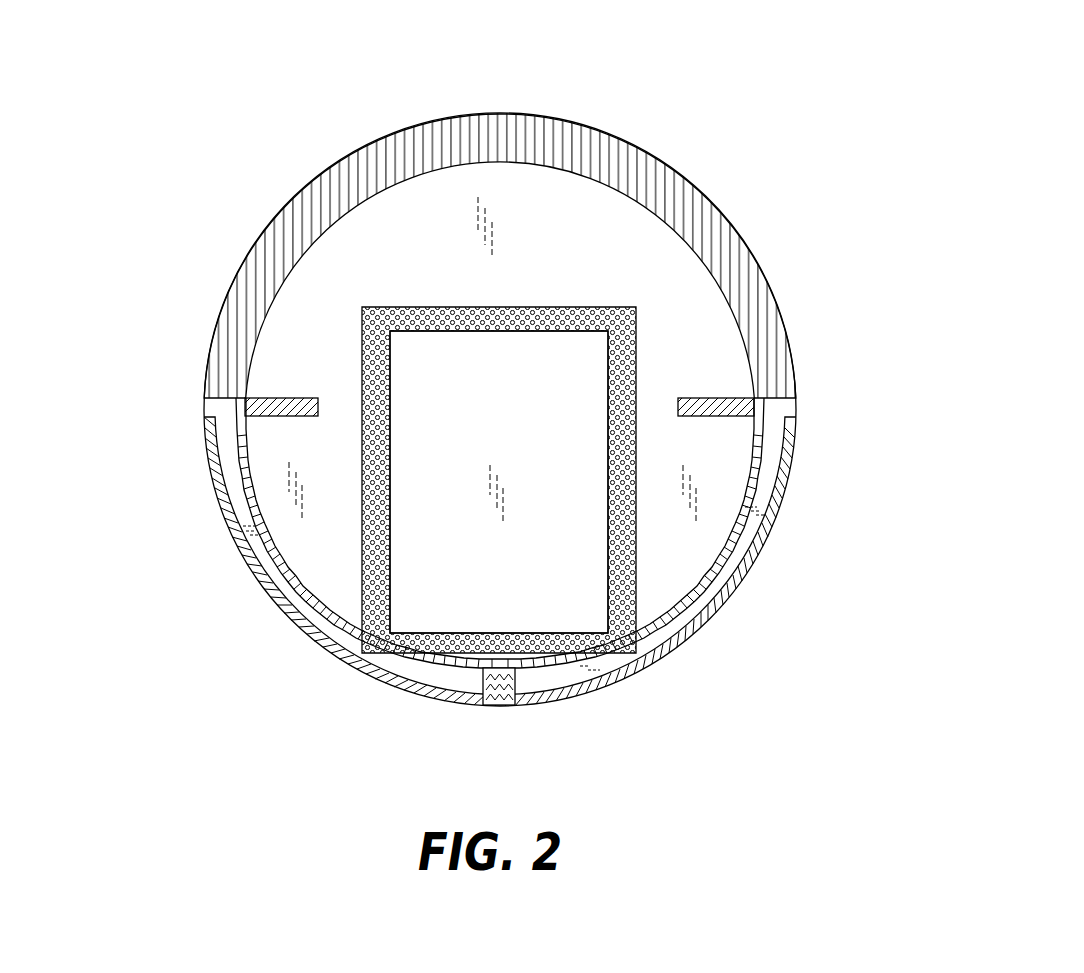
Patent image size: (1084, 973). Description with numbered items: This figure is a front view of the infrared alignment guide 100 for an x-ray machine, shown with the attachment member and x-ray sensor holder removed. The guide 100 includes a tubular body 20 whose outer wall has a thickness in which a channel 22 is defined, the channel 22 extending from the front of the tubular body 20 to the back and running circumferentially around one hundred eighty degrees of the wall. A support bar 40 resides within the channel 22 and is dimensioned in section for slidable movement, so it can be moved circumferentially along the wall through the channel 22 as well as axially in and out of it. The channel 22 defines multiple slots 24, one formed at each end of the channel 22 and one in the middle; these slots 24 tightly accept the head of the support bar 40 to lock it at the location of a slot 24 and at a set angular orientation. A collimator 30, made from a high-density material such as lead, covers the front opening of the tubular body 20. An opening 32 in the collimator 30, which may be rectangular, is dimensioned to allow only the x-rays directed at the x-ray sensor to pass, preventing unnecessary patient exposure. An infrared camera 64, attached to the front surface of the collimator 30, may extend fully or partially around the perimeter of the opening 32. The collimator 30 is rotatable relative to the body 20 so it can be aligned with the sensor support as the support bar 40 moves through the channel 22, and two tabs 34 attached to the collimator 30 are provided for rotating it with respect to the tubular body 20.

The infrared alignment guide 100 is at (125, 82).
The tubular body 20 is at (647, 152).
The channel 22 is at (656, 641).
The slot 24 is at (170, 407).
The collimator 30 is at (430, 183).
The opening 32 is at (560, 345).
The tab 34 is at (276, 396).
The support bar 40 is at (483, 687).
The infrared camera 64 is at (360, 587).